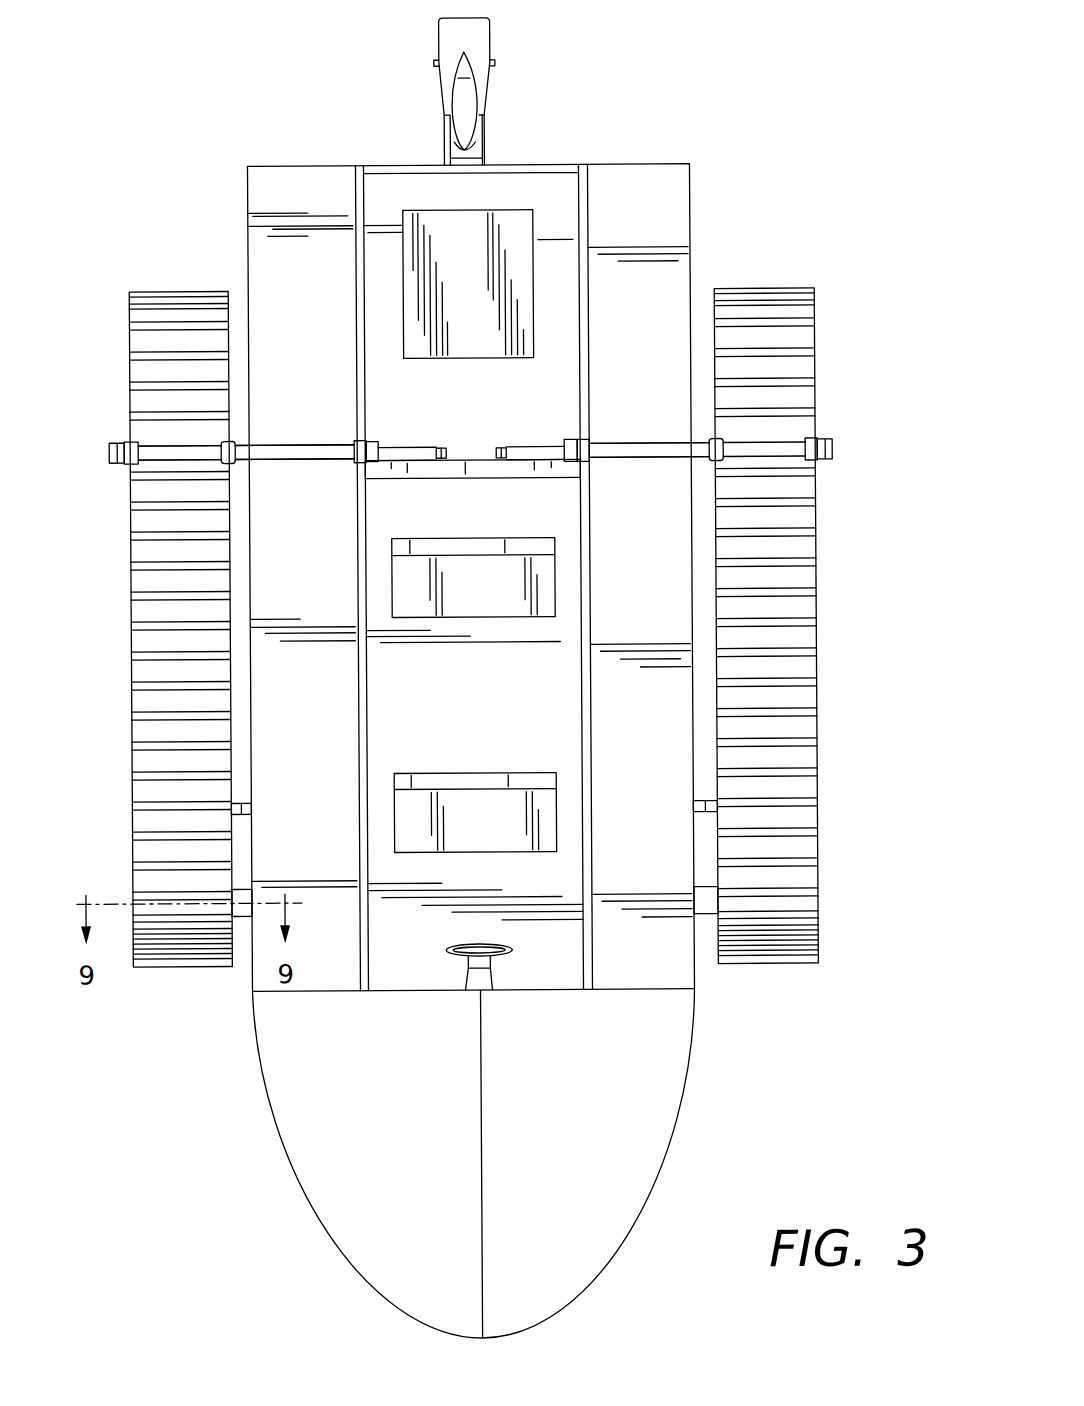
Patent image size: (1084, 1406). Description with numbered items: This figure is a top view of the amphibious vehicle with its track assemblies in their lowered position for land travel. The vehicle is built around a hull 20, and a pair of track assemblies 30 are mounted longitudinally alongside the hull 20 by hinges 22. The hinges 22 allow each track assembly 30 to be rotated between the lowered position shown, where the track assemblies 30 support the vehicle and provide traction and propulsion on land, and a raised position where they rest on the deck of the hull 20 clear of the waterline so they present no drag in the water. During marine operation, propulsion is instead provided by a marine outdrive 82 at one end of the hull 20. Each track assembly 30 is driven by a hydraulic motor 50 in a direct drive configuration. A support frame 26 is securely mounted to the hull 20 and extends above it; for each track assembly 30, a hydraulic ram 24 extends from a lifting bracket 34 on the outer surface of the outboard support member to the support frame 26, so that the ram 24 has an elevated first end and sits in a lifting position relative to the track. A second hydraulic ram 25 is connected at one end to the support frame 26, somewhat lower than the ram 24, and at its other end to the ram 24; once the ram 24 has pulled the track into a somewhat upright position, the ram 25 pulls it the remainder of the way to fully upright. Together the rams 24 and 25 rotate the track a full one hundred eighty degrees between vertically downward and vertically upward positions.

The hull 20 is at (306, 1198).
The hinge 22 is at (256, 803).
The hydraulic ram 24 is at (303, 446).
The hydraulic ram 25 is at (400, 446).
The support frame 26 is at (486, 470).
The track assembly 30 is at (818, 770).
The lifting bracket 34 is at (835, 447).
The hydraulic motor 50 is at (255, 888).
The marine outdrive 82 is at (532, 60).